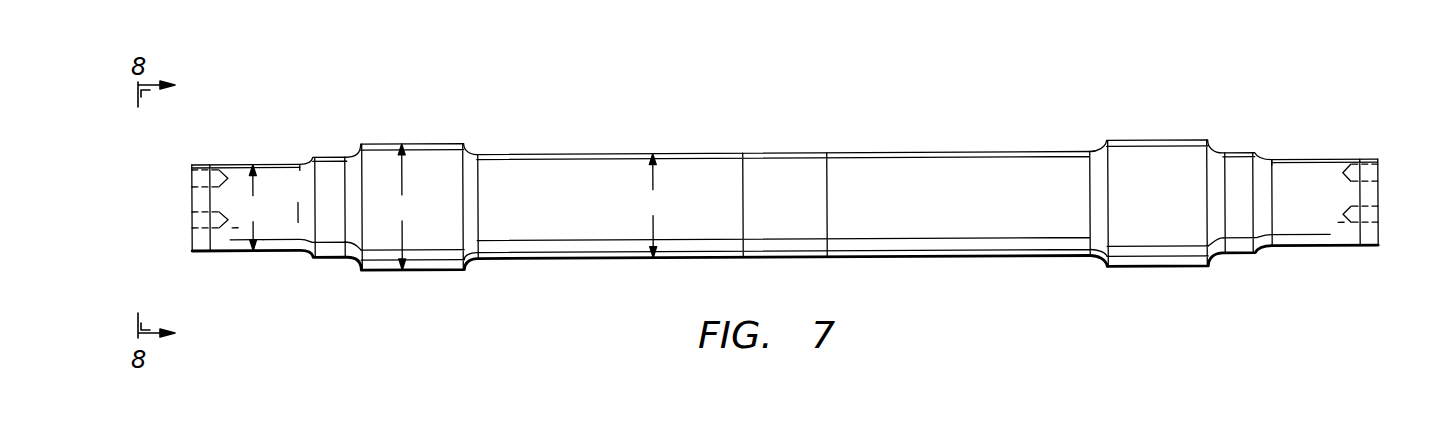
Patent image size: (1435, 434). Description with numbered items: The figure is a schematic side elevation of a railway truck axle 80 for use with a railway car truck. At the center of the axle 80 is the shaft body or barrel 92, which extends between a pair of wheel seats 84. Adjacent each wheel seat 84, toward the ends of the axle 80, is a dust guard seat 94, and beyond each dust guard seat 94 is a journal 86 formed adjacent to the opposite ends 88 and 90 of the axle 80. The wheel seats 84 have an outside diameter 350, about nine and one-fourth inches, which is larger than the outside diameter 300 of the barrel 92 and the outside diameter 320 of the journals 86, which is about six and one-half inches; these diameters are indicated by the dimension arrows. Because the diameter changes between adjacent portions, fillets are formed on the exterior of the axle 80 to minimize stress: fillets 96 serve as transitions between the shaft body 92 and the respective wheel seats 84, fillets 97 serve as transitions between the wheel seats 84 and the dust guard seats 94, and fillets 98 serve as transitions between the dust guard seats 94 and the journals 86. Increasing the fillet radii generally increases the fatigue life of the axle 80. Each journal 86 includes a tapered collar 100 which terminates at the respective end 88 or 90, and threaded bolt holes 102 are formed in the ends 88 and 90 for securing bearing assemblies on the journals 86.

The axle 80 is at (688, 106).
The wheel seat 84 is at (443, 273).
The journal 86 is at (268, 254).
The end 88 is at (192, 240).
The end 90 is at (1380, 196).
The shaft body or barrel 92 is at (968, 157).
The dust guard seat 94 is at (333, 158).
The fillet 96 is at (472, 154).
The fillet 97 is at (353, 265).
The fillet 98 is at (300, 162).
The tapered collar 100 is at (202, 165).
The bore holes 102 is at (195, 178).
The outside diameter of barrel 300 is at (652, 206).
The outside diameter of journal 320 is at (252, 208).
The outside diameter of wheel seat 350 is at (402, 207).